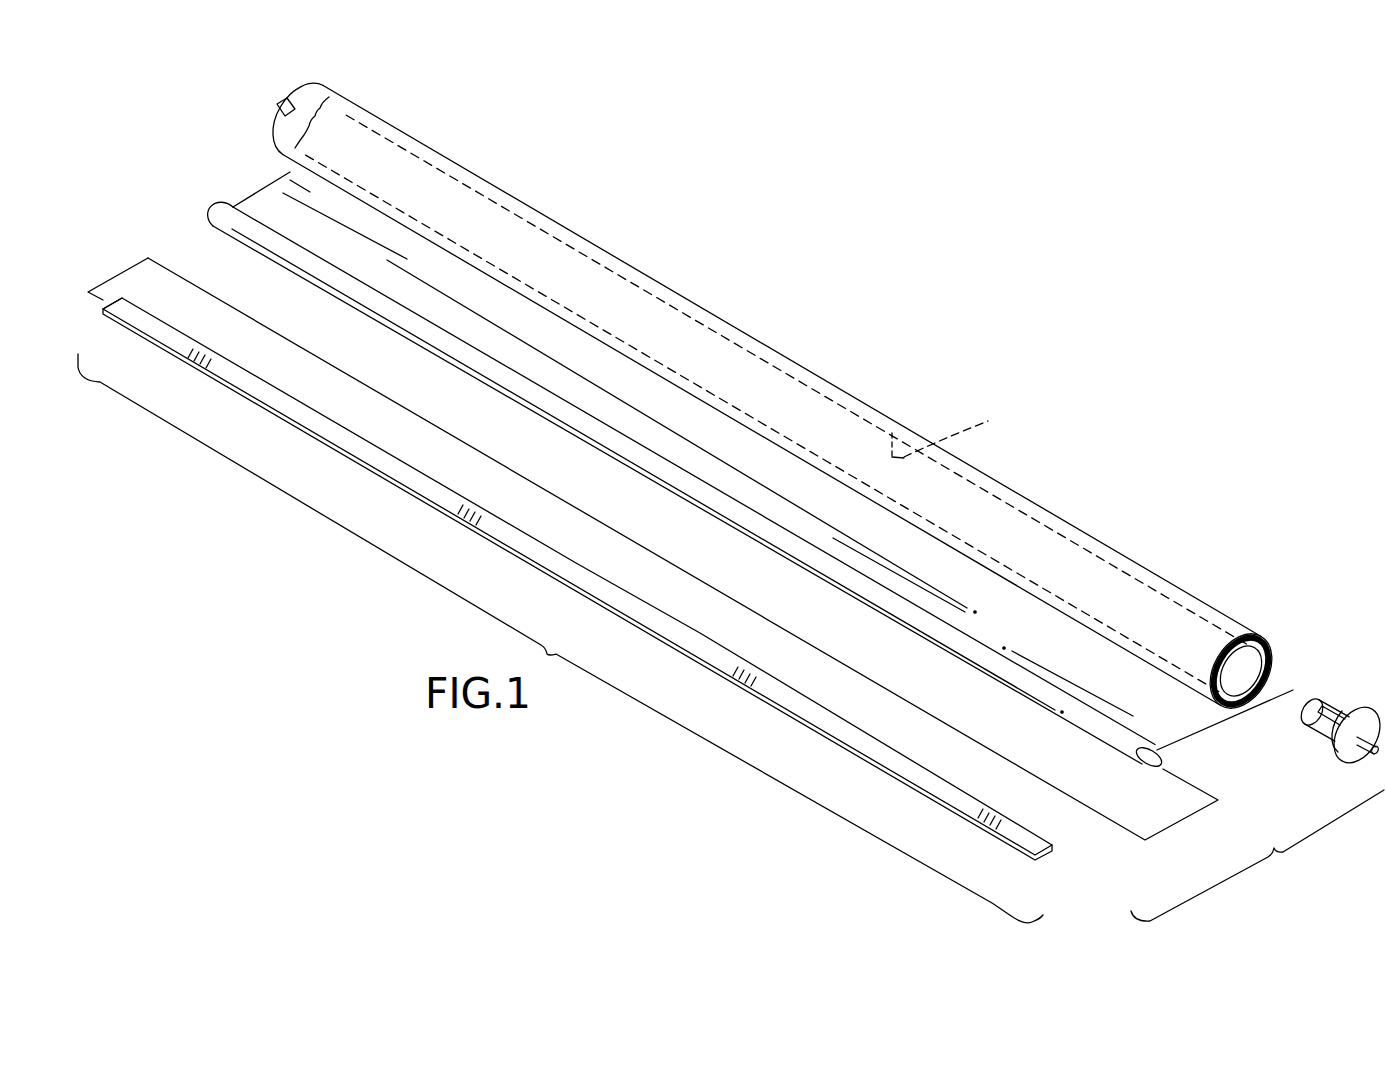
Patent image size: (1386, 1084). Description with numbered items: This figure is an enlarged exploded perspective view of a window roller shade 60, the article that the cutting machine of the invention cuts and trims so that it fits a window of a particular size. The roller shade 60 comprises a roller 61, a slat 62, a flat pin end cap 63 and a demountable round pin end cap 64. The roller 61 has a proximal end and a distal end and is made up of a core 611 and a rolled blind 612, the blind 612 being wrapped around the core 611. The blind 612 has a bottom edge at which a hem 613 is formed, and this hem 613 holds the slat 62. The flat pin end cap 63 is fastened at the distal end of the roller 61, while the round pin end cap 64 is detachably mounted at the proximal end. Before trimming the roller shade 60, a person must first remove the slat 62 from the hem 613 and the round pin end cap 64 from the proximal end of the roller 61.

The window roller shade 60 is at (731, 638).
The roller 61 is at (789, 335).
The core 611 is at (963, 432).
The rolled blind 612 is at (1175, 718).
The hem 613 is at (1097, 723).
The slat 62 is at (912, 772).
The flat pin end cap 63 is at (280, 115).
The demountable round pin end cap 64 is at (1345, 768).